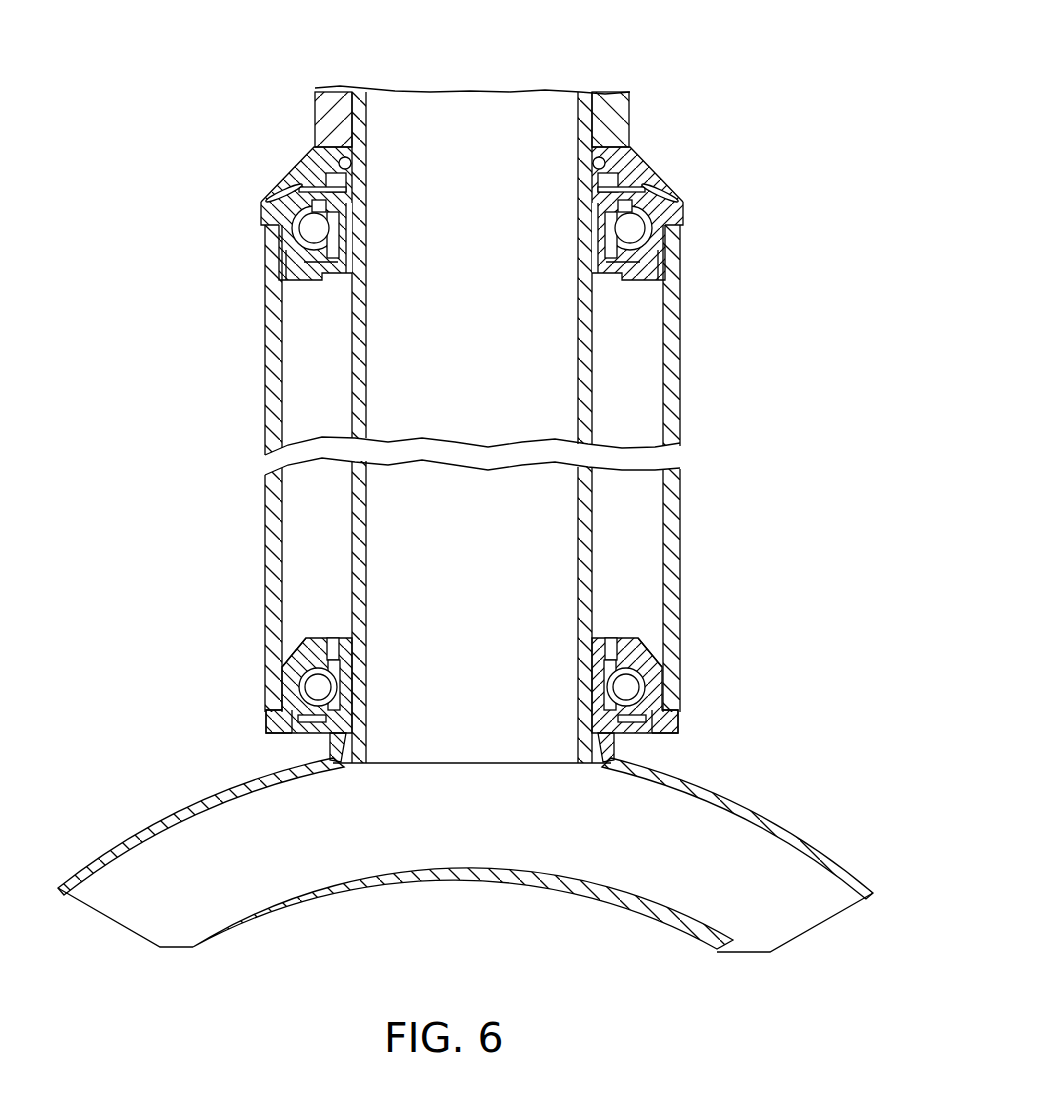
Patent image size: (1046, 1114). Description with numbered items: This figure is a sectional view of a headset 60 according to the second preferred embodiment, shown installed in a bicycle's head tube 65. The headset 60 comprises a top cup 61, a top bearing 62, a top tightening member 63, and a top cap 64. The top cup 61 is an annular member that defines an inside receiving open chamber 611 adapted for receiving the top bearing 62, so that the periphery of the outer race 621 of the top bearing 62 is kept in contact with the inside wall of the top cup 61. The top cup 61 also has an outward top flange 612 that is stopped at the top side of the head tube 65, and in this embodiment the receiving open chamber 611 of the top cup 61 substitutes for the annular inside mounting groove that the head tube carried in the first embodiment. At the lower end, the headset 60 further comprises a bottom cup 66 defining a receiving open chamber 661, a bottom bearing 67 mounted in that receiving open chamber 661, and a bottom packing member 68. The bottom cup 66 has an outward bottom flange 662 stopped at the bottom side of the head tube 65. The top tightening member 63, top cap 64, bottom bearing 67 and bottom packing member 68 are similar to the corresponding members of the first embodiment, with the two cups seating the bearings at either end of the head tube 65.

The headset 60 is at (705, 140).
The top cup 61 is at (657, 245).
The receiving open chamber 611 is at (655, 262).
The outward top flange 612 is at (682, 222).
The top bearing 62 is at (633, 222).
The outer race 621 is at (667, 200).
The top tightening member 63 is at (617, 190).
The top cap 64 is at (612, 92).
The head tube 65 is at (677, 378).
The bottom cup 66 is at (652, 692).
The receiving open chamber 661 is at (627, 680).
The outward bottom flange 662 is at (675, 725).
The bottom bearing 67 is at (638, 647).
The bottom packing member 68 is at (615, 736).